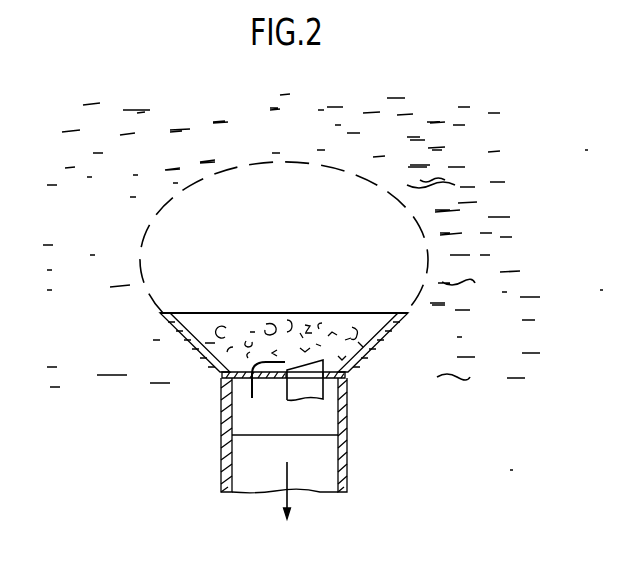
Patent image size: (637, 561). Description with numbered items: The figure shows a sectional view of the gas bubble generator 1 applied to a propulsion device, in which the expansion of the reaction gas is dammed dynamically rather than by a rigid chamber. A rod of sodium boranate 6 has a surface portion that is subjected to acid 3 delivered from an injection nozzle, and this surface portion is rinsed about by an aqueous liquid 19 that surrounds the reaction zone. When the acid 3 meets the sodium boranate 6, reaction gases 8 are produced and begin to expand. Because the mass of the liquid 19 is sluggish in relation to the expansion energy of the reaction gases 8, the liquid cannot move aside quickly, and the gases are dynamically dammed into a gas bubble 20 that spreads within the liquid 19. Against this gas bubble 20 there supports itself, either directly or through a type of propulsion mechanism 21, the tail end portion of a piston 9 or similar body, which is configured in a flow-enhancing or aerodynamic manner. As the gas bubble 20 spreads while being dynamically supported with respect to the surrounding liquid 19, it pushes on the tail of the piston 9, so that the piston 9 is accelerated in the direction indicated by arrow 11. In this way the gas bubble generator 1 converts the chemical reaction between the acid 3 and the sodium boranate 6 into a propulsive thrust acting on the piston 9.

The gas bubble generator 1 is at (360, 378).
The acid 3 is at (250, 389).
The sodium boranate 6 is at (313, 387).
The reaction gas 8 is at (245, 343).
The piston 9 is at (343, 460).
The arrow 11 is at (282, 494).
The aqueous liquid 19 is at (318, 133).
The gas bubble 20 is at (267, 244).
The propulsion mechanism 21 is at (388, 341).